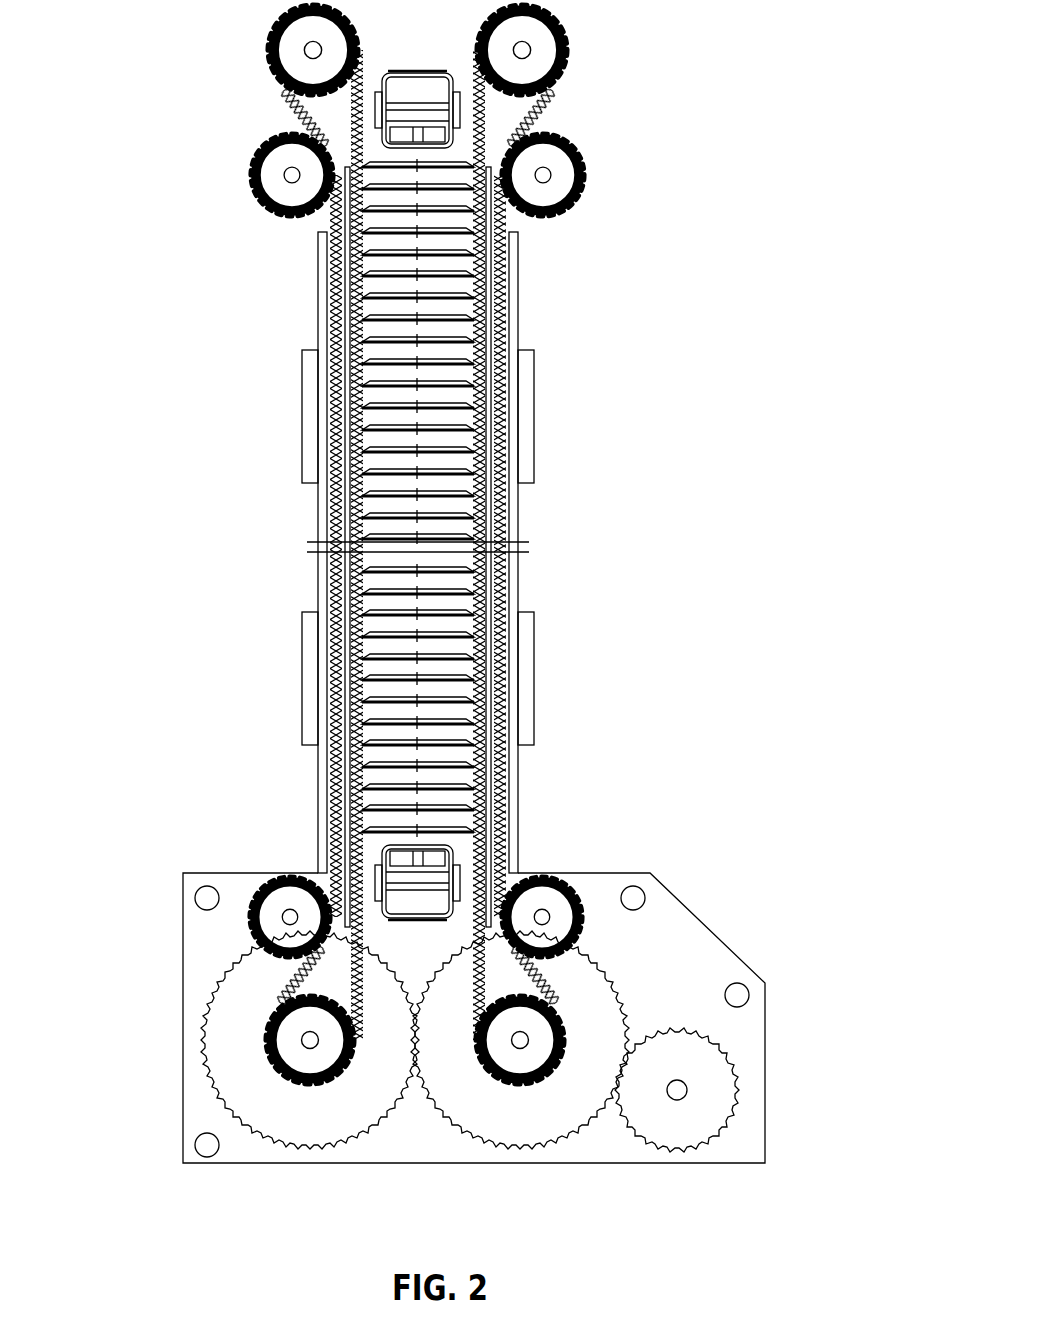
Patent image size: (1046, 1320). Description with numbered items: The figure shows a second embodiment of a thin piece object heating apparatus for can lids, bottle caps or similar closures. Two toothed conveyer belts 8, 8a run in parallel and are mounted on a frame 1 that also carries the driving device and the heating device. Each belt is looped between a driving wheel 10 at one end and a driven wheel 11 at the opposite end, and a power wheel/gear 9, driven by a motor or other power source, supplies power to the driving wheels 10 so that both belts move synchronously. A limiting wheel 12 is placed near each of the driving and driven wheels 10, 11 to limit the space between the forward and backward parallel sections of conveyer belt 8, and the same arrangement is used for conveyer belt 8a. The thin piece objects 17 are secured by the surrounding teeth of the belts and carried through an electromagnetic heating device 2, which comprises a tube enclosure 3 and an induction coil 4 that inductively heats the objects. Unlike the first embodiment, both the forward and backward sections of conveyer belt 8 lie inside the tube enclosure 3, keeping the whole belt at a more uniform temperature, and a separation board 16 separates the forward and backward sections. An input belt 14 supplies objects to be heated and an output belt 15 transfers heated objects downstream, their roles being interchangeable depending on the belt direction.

The frame 1 is at (657, 940).
The electromagnetic heating device 2 is at (230, 562).
The tube enclosure 3 is at (518, 285).
The induction coil 4 is at (535, 400).
The conveyer belt 8 is at (335, 785).
The conveyer belt 8a is at (497, 768).
The power wheel/gear 9 is at (697, 1063).
The driving wheel 10 is at (237, 1020).
The driven wheel 11 is at (310, 68).
The limiting wheel 12 is at (543, 157).
The input belt 14 is at (415, 870).
The output belt 15 is at (417, 113).
The separation board 16 is at (347, 278).
The thin piece object 17 is at (462, 612).